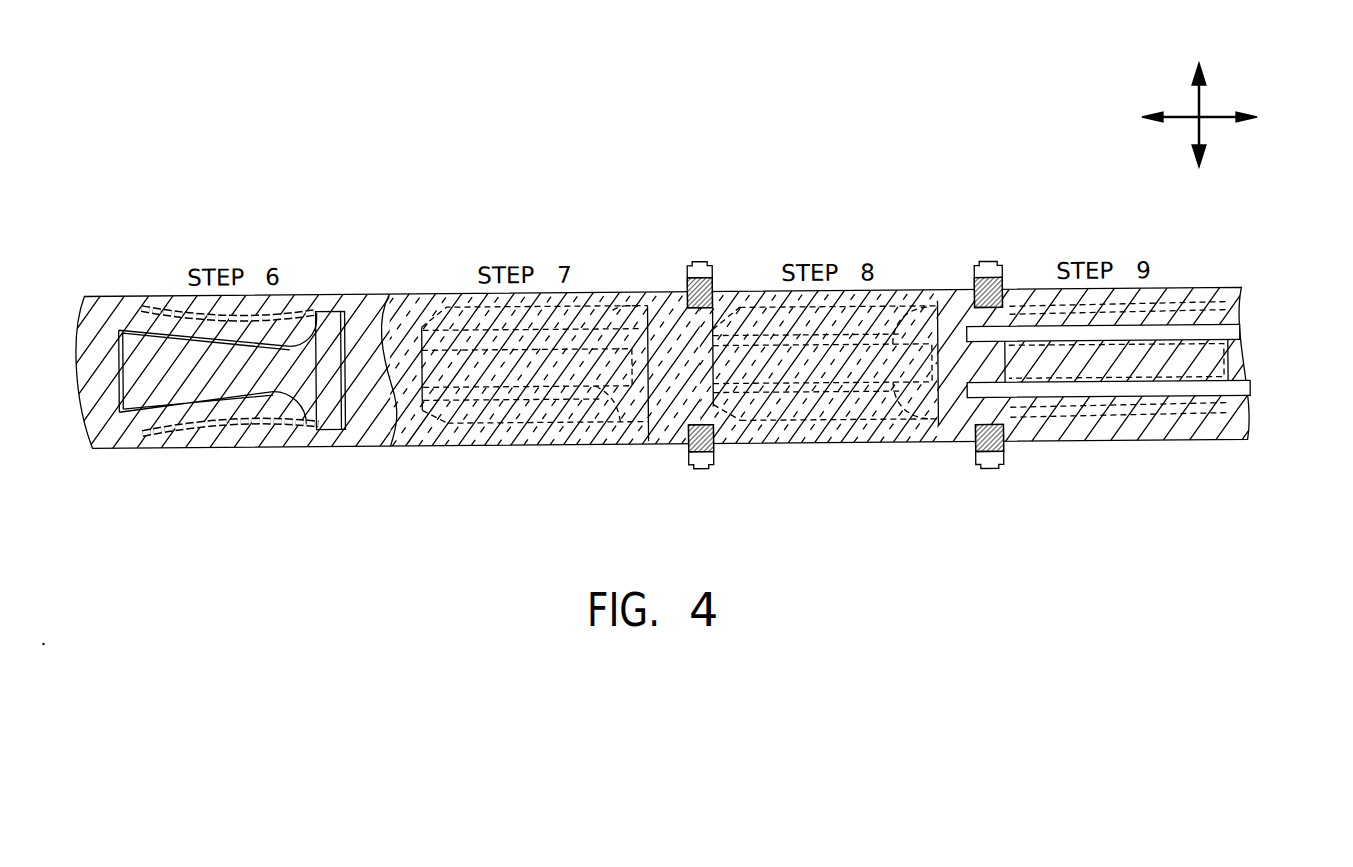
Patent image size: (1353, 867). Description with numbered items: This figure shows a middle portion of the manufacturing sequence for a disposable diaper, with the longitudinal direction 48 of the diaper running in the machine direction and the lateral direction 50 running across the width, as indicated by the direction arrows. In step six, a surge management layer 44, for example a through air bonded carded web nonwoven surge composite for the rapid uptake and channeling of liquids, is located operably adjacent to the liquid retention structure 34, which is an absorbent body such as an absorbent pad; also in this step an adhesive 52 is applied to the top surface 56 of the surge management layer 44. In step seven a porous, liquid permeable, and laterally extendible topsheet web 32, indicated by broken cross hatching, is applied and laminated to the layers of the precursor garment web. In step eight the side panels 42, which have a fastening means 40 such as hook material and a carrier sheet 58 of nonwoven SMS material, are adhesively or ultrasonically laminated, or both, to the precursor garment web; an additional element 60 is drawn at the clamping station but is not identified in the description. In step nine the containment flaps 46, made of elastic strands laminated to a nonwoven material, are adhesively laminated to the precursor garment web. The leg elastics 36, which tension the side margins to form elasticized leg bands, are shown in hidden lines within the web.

The topsheet web 32 is at (423, 428).
The liquid retention structure 34 is at (333, 327).
The leg elastics 36 is at (490, 426).
The fastening means 40 is at (712, 464).
The side panels 42 is at (668, 485).
The surge management layer 44 is at (330, 387).
The containment flaps 46 is at (1240, 332).
The longitudinal direction 48 is at (1220, 117).
The lateral direction 50 is at (1199, 100).
The adhesive 52 is at (190, 429).
The top surface 56 is at (263, 367).
The carrier sheet 58 is at (688, 450).
The clamp insert 60 is at (713, 446).